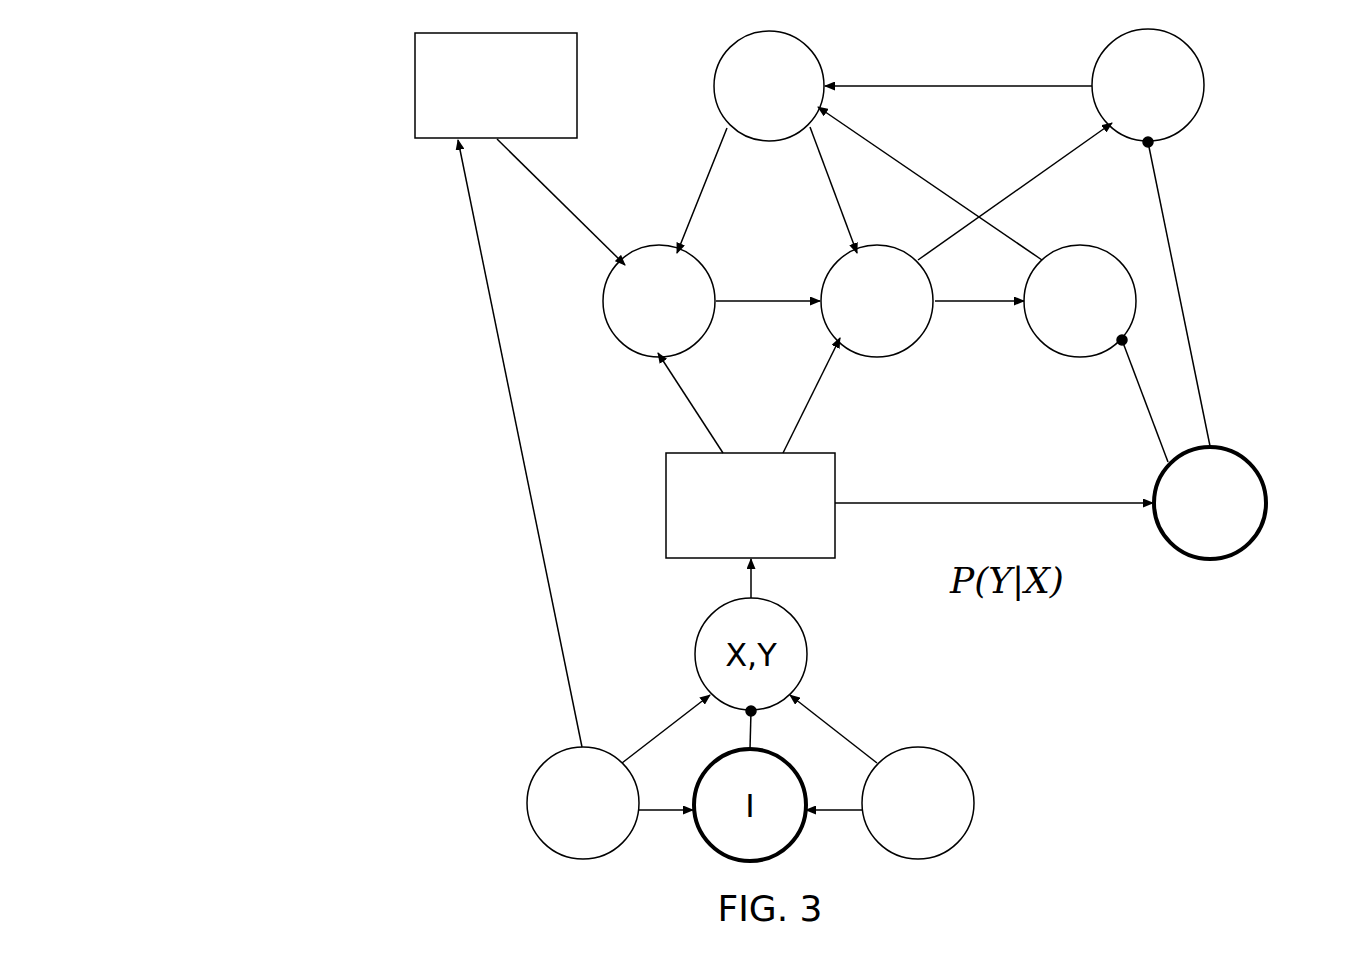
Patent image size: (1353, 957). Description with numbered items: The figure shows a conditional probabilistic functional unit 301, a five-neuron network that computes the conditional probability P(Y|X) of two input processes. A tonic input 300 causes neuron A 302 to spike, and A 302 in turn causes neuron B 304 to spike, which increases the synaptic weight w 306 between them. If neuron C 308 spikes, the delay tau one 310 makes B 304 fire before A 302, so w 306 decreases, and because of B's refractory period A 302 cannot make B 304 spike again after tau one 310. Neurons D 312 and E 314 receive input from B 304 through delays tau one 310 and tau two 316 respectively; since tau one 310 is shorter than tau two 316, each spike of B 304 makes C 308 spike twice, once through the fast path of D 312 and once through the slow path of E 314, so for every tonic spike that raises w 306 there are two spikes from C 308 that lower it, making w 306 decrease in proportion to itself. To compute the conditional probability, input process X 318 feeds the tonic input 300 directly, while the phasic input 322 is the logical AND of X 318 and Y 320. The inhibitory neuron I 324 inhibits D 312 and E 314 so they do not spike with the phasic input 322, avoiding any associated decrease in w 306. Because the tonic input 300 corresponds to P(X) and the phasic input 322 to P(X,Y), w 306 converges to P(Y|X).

The tonic input 300 is at (415, 97).
The conditional probabilistic functional unit 301 is at (177, 74).
The neuron A 302 is at (617, 328).
The neuron B 304 is at (912, 345).
The synaptic weight w 306 is at (733, 300).
The neuron C 308 is at (812, 58).
The delay tau one 310 is at (712, 165).
The neuron D 312 is at (1063, 352).
The neuron E 314 is at (1200, 72).
The delay tau two 316 is at (1008, 86).
The input process X 318 is at (550, 762).
The input process Y 320 is at (955, 777).
The phasic input 322 is at (666, 503).
The inhibitory neuron I 324 is at (1240, 470).